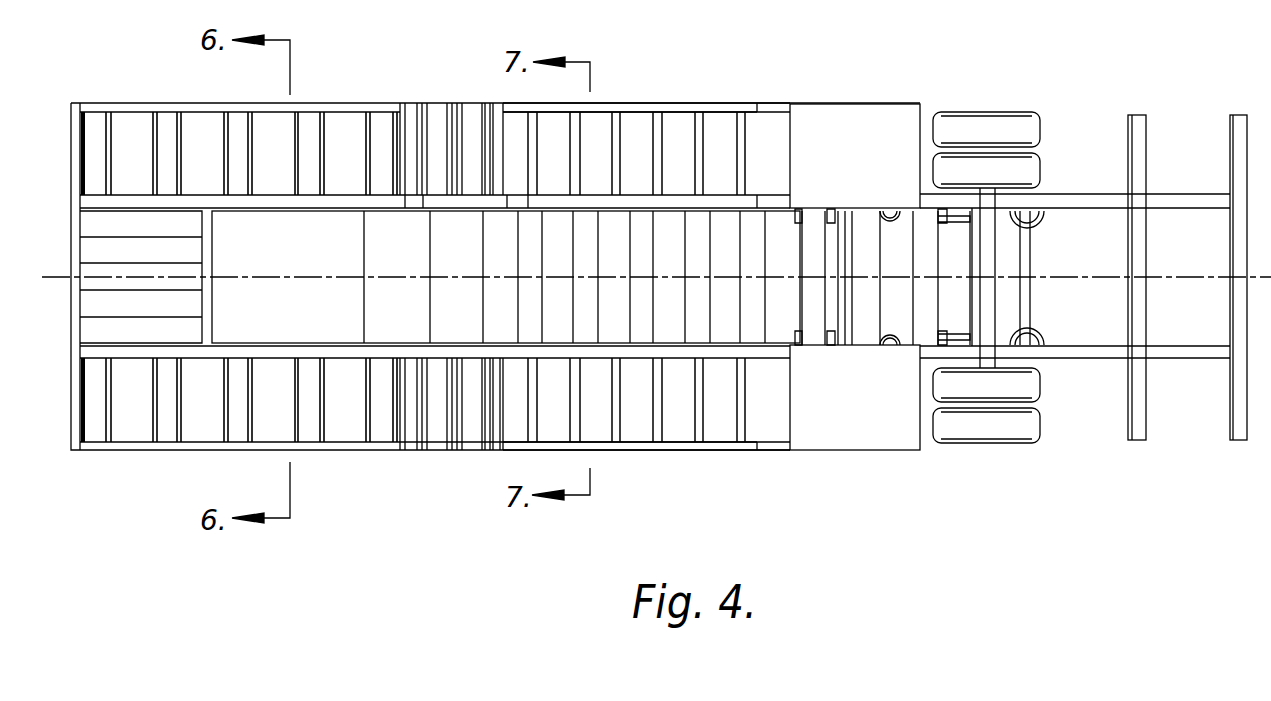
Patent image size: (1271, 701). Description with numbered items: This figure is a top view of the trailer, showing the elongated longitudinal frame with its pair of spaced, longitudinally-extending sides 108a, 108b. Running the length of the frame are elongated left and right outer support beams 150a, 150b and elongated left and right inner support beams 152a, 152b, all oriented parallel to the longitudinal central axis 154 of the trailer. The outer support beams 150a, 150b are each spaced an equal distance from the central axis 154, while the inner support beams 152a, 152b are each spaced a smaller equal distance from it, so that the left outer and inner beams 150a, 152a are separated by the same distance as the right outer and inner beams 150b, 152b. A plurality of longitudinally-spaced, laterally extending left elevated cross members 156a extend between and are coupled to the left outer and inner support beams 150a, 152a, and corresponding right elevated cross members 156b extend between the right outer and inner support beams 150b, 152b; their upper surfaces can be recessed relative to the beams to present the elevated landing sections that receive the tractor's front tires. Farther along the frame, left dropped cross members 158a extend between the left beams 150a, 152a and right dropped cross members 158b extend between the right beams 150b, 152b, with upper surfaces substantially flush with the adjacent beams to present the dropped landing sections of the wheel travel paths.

The left longitudinally-extending side 108a is at (470, 447).
The right longitudinally-extending side 108b is at (330, 103).
The left outer support beam 150a is at (690, 448).
The right outer support beam 150b is at (668, 103).
The left inner support beam 152a is at (707, 355).
The right inner support beam 152b is at (707, 200).
The longitudinal central axis 154 is at (243, 278).
The left elevated cross members 156a is at (237, 430).
The right elevated cross members 156b is at (235, 125).
The left dropped cross members 158a is at (617, 423).
The right dropped cross members 158b is at (615, 133).